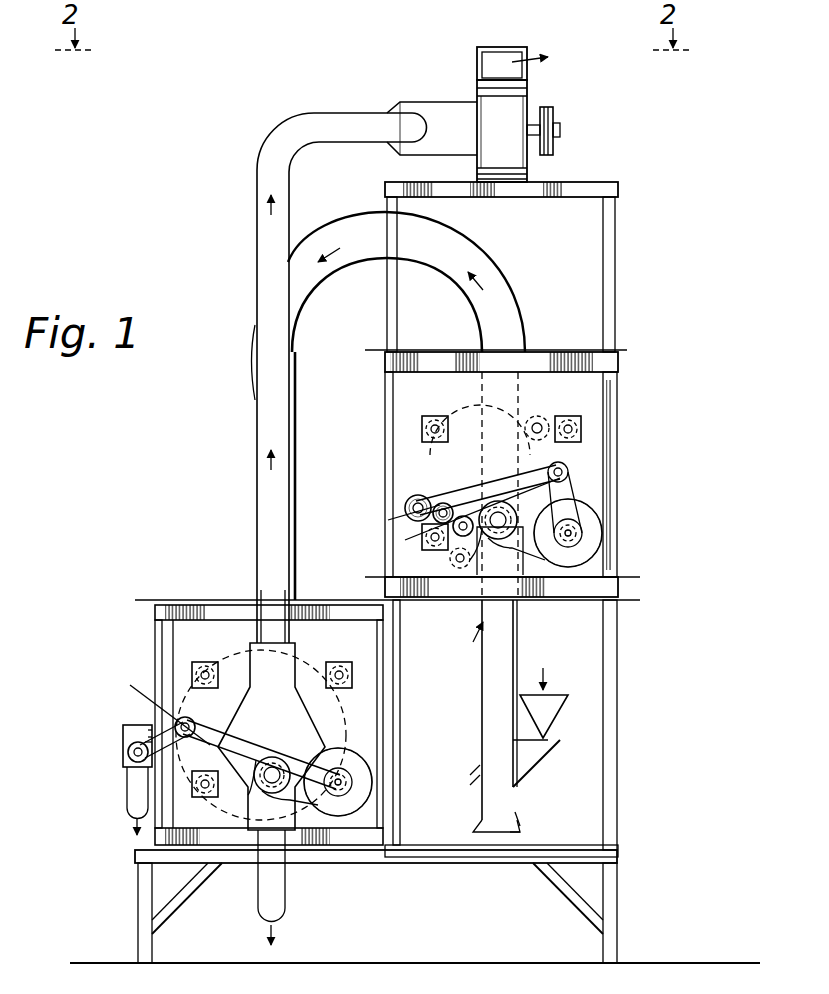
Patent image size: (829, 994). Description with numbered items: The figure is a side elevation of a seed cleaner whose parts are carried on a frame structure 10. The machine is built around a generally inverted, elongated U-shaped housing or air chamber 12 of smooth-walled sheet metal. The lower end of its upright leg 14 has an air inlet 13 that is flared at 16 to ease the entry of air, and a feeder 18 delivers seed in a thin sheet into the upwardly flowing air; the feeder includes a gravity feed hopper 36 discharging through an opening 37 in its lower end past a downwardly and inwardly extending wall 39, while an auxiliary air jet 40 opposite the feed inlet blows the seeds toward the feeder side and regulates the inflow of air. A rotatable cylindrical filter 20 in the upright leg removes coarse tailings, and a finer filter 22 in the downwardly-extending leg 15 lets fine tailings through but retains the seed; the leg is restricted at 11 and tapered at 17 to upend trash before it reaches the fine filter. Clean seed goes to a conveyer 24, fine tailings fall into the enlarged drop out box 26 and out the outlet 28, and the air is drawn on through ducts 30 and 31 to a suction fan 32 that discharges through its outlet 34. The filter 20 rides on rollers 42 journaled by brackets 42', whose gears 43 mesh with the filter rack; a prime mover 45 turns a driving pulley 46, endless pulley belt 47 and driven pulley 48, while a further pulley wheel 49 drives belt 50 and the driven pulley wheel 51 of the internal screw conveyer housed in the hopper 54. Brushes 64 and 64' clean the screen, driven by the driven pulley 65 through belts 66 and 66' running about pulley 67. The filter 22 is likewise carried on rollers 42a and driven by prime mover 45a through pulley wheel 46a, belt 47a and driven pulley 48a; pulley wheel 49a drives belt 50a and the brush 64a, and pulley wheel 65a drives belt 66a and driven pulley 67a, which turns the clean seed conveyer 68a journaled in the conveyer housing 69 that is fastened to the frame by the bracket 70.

The frame structure 10 is at (605, 275).
The restriction 11 is at (257, 410).
The housing 12 is at (470, 259).
The air inlet 13 is at (520, 838).
The upright leg 14 is at (513, 803).
The downwardly-extending leg 15 is at (298, 342).
The flare 16 is at (520, 828).
The outwardly and downwardly tapered portion 17 is at (258, 560).
The feeder 18 is at (545, 762).
The filter 20 is at (600, 461).
The filter 22 is at (240, 660).
The conveyer 24 is at (123, 742).
The drop out box 26 is at (280, 720).
The outlet 28 is at (287, 893).
The duct 30 is at (257, 285).
The duct 31 is at (430, 108).
The suction fan 32 is at (530, 86).
The outlet 34 is at (500, 48).
The gravity feed hopper 36 is at (550, 695).
The opening 37 is at (549, 740).
The wall 39 is at (556, 113).
The auxiliary air jet 40 is at (470, 785).
The rollers 42 is at (457, 483).
The brackets 42' is at (441, 420).
The rollers 42a is at (378, 772).
The gears 43 is at (605, 531).
The prime mover 45 is at (498, 505).
The prime mover 45a is at (245, 800).
The driving pulley 46 is at (464, 545).
The pulley wheel 46a is at (275, 765).
The endless pulley belt 47 is at (522, 562).
The endless pulley belt 47a is at (310, 818).
The driven pulley 48 is at (600, 514).
The driven pulley 48a is at (378, 748).
The pulley wheel 49 is at (600, 548).
The pulley wheel 49a is at (378, 788).
The endless pulley belt 50 is at (605, 492).
The endless pulley belt 50a is at (192, 722).
The driven pulley wheel 51 is at (600, 478).
The hopper 54 is at (488, 490).
The brush 64 is at (389, 496).
The brush 64' is at (451, 491).
The brush 64a is at (153, 708).
The driven pulley 65 is at (430, 520).
The pulley wheel 65a is at (212, 776).
The belt 66 is at (450, 484).
The belt 66' is at (421, 486).
The endless pulley belt 66a is at (182, 720).
The pulley 67 is at (590, 446).
The driven pulley 67a is at (128, 753).
The clean seed conveyer 68a is at (140, 745).
The conveyer housing 69 is at (140, 728).
The bracket 70 is at (150, 735).